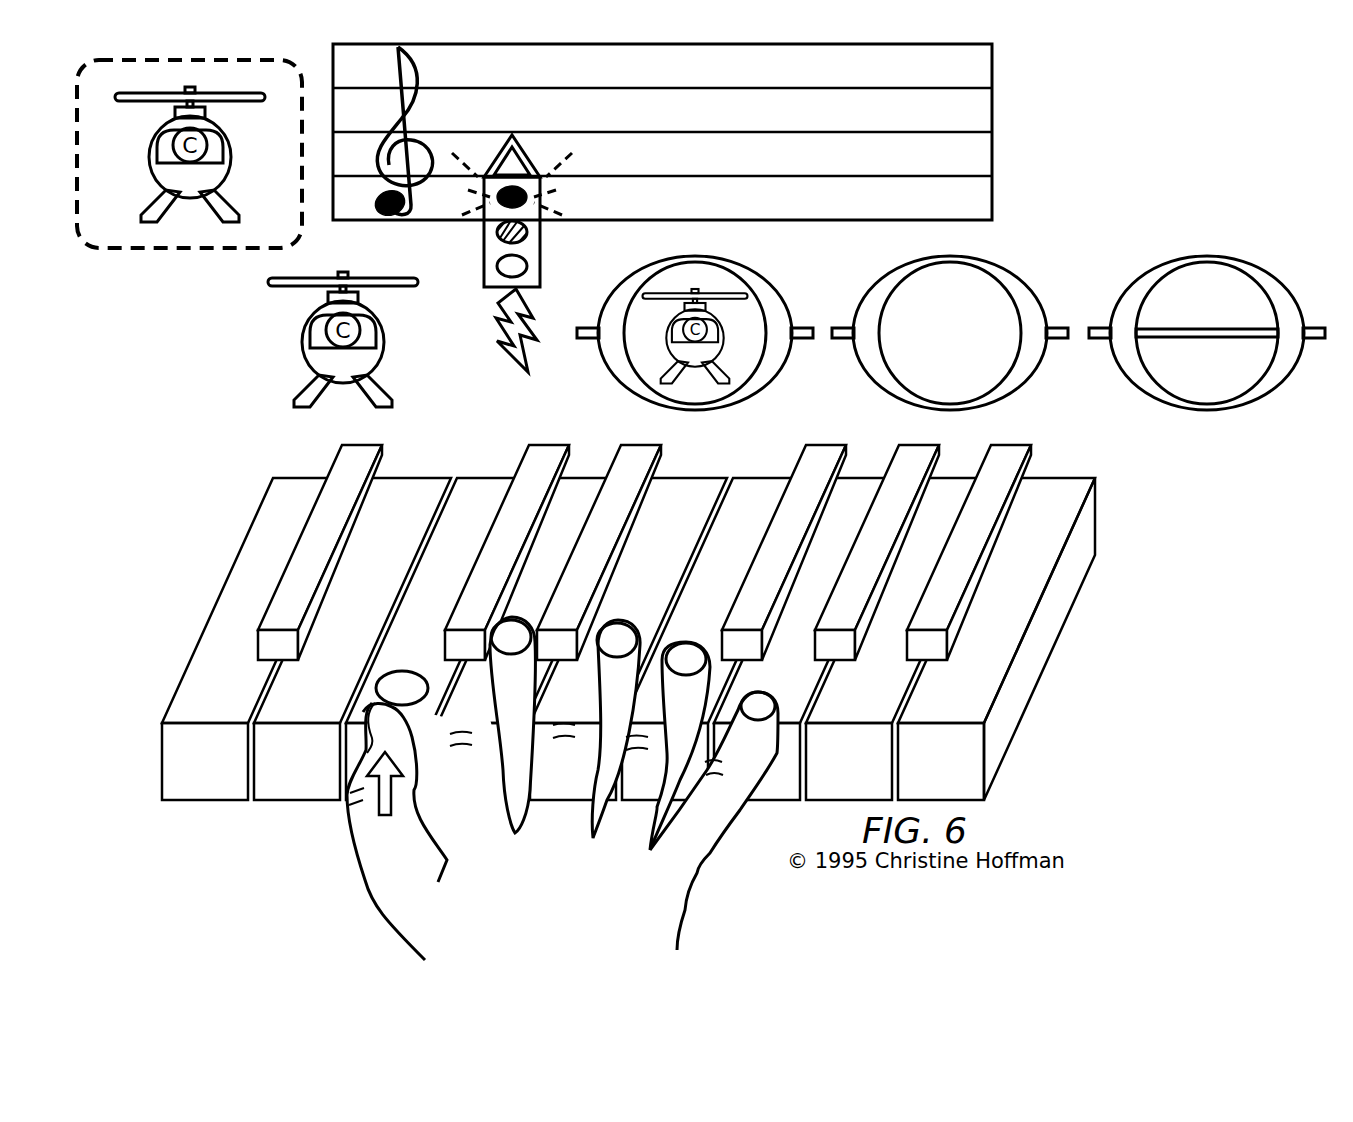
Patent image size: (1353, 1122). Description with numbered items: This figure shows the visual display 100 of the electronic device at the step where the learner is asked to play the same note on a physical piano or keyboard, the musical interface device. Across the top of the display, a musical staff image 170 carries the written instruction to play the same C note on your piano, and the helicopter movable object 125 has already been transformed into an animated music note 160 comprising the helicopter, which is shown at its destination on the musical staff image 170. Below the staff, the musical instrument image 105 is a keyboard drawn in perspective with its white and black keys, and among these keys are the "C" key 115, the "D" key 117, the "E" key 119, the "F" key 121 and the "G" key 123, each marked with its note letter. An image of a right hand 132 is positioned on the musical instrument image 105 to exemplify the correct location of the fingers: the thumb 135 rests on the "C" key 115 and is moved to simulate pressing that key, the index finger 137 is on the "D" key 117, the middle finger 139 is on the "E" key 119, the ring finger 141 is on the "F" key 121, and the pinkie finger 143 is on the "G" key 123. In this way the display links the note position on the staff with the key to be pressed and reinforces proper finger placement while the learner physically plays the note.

The visual display 100 is at (1186, 68).
The musical staff image 170 is at (993, 95).
The movable object 125 is at (195, 249).
The animated music note 160 is at (765, 390).
The musical instrument image 105 is at (646, 622).
The "C" key 115 is at (484, 528).
The "D" key 117 is at (583, 528).
The "E" key 119 is at (692, 528).
The "F" key 121 is at (759, 528).
The "G" key 123 is at (864, 528).
The thumb 135 is at (405, 847).
The index finger 137 is at (513, 695).
The middle finger 139 is at (617, 698).
The ring finger 141 is at (688, 707).
The pinkie finger 143 is at (759, 761).
The hand 132 is at (562, 788).